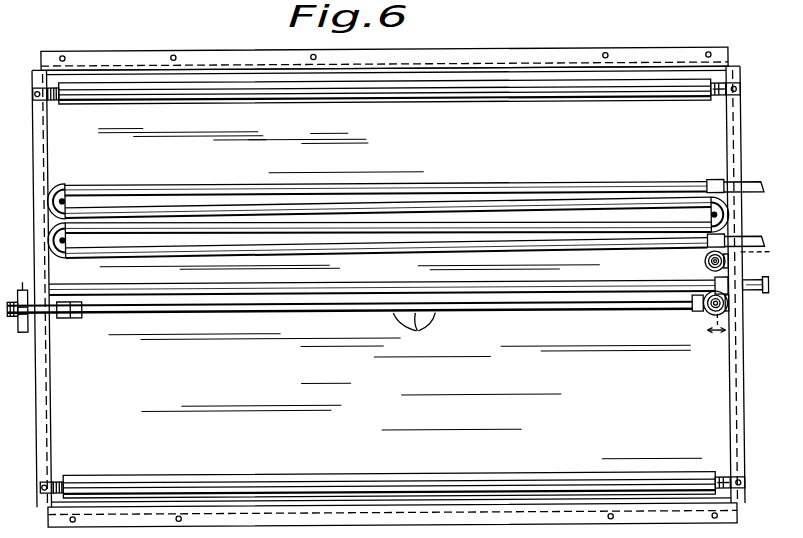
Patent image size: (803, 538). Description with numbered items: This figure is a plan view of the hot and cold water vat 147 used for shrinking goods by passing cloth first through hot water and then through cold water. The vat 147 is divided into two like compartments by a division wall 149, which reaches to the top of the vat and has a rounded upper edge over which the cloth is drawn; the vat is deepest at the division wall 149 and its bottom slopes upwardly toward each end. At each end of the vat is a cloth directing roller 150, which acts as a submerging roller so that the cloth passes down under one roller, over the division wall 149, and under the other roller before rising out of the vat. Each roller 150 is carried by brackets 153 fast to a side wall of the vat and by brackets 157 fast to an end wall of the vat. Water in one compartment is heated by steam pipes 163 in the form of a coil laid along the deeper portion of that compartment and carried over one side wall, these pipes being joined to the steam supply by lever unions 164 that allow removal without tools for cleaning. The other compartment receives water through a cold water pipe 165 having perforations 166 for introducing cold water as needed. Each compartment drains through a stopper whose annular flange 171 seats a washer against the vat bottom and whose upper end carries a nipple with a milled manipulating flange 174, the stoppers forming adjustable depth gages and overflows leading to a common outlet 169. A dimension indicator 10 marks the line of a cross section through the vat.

The vat 147 is at (388, 287).
The cloth directing roller 150 is at (295, 100).
The brackets 153 is at (53, 100).
The brackets 157 is at (723, 96).
The steam pipes 163 is at (455, 187).
The annular flange 171 is at (741, 245).
The manipulating flange 174 is at (705, 265).
The division wall 149 is at (395, 282).
The common outlet 169 is at (758, 295).
The cold water pipe 165 is at (291, 314).
The lever unions 164 is at (18, 326).
The perforations 166 is at (416, 336).
The dimension indicator 10 is at (752, 298).